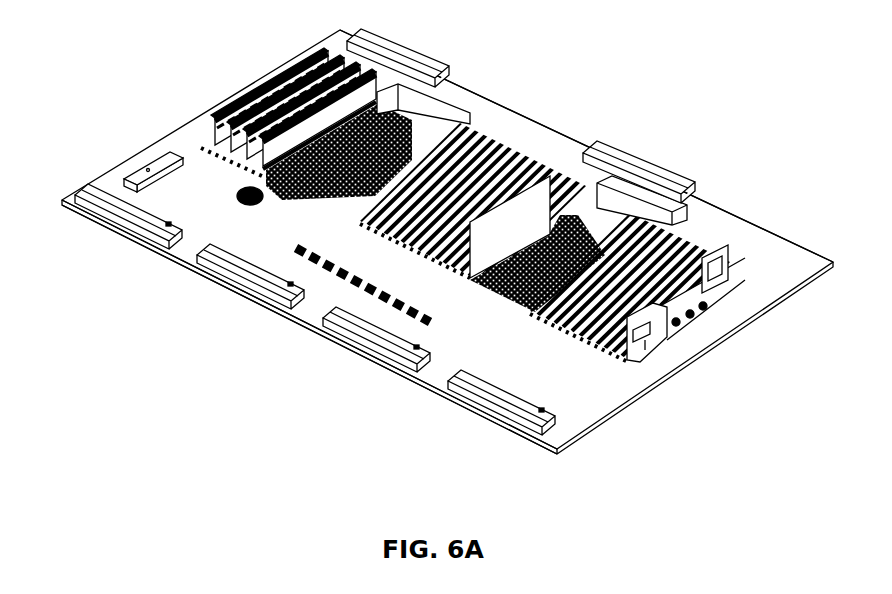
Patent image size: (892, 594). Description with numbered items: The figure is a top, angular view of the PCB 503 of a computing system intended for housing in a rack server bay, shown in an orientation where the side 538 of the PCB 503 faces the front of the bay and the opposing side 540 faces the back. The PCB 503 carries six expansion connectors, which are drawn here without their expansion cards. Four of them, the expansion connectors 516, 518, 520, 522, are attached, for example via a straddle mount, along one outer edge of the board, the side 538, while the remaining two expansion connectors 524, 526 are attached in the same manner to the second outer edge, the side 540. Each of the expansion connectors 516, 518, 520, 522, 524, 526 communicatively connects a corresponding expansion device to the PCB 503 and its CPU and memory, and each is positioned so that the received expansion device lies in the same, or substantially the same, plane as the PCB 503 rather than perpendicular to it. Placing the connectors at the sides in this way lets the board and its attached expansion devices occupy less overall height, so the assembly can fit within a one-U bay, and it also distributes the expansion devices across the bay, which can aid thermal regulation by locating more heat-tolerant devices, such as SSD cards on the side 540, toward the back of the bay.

The PCB 503 is at (598, 396).
The expansion connector 516 is at (118, 225).
The expansion connector 518 is at (240, 285).
The expansion connector 520 is at (363, 347).
The expansion connector 522 is at (490, 411).
The expansion connector 524 is at (398, 45).
The expansion connector 526 is at (643, 168).
The side 538 is at (295, 328).
The side 540 is at (565, 131).